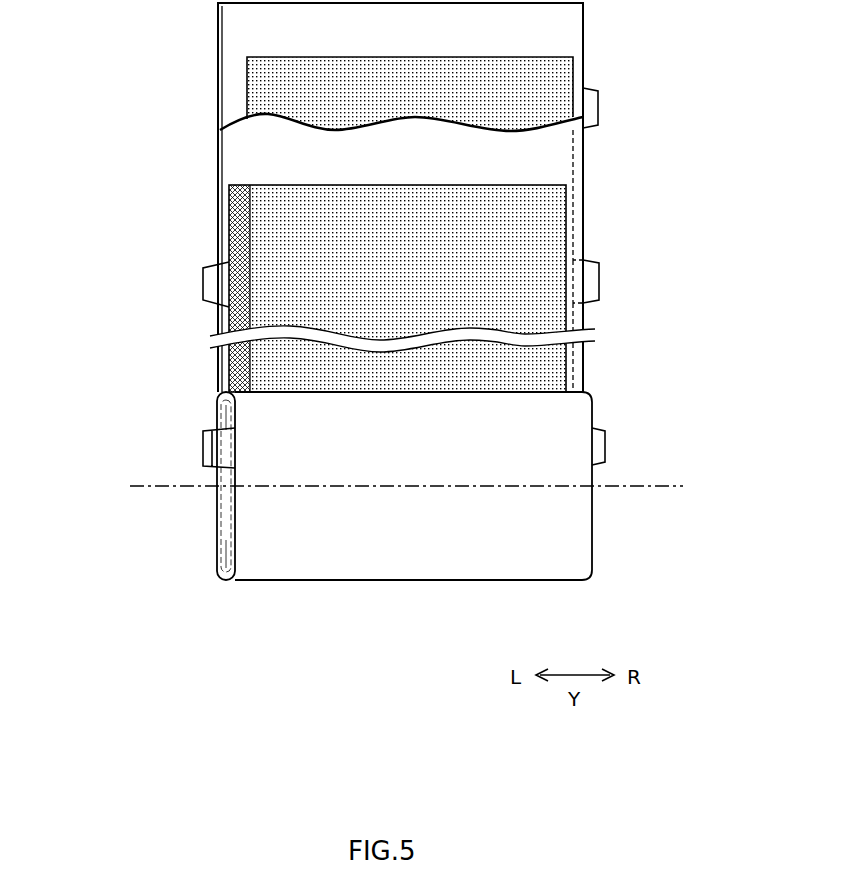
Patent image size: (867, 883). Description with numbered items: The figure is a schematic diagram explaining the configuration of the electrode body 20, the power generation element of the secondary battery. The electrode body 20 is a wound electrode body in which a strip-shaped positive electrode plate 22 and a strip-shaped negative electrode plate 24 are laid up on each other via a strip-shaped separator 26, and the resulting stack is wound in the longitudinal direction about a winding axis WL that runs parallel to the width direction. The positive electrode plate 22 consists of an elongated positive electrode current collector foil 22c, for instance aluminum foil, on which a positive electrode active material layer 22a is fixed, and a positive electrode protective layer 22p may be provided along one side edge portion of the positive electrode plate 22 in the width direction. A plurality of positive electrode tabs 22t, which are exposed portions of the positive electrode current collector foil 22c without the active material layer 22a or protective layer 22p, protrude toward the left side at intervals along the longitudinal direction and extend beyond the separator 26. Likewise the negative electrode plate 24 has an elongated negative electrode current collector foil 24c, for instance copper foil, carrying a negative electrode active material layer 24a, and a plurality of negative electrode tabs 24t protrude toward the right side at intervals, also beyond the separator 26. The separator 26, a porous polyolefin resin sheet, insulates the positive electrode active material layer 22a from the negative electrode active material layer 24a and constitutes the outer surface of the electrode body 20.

The electrode body 20 is at (461, 560).
The positive electrode plate 22 is at (294, 325).
The positive electrode active material layer 22a is at (283, 250).
The positive electrode current collector foil 22c is at (230, 320).
The positive electrode protective layer 22p is at (229, 202).
The positive electrode tab 22t is at (210, 285).
The negative electrode plate 24 is at (497, 260).
The negative electrode active material layer 24a is at (552, 82).
The negative electrode current collector foil 24c is at (573, 202).
The negative electrode tab 24t is at (598, 108).
The separator 26 is at (240, 24).
The winding axis WL is at (680, 483).